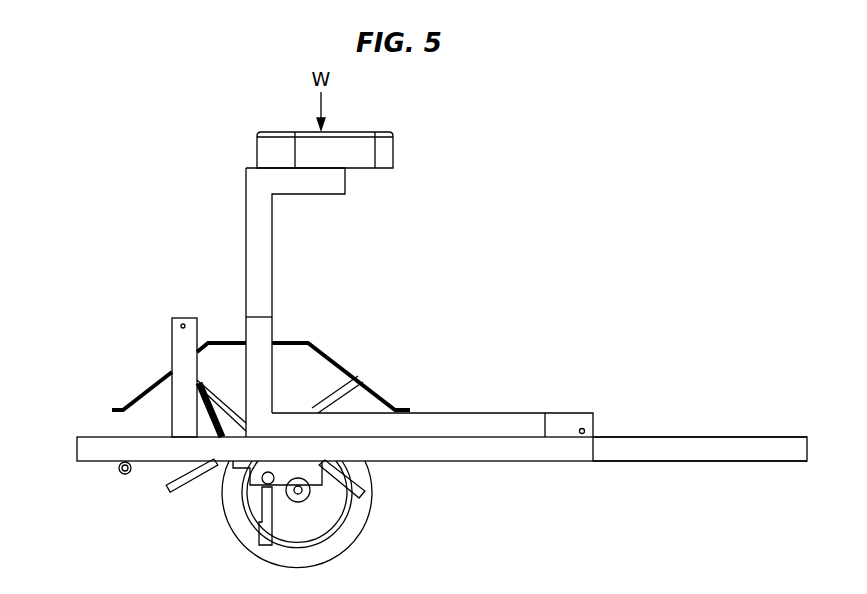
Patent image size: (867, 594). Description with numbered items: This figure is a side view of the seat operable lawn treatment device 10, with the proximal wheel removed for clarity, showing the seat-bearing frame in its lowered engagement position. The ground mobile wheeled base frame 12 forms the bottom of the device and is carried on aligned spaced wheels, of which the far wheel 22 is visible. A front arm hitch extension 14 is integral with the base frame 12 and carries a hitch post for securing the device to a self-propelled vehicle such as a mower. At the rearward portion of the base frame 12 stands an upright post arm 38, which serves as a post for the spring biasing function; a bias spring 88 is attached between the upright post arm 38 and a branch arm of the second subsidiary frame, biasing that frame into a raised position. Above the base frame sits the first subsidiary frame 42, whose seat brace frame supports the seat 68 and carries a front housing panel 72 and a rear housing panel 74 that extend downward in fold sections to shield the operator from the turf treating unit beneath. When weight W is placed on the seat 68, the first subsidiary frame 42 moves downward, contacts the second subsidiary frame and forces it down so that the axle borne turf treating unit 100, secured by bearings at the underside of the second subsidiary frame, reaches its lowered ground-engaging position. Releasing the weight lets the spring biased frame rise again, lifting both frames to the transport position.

The seat operable lawn treatment device 10 is at (598, 215).
The wheeled base frame 12 is at (553, 448).
The front arm hitch extension 14 is at (748, 448).
The wheel 22 is at (348, 530).
The upright post arm 38 is at (178, 420).
The first subsidiary frame 42 is at (423, 425).
The seat 68 is at (385, 155).
The front housing panel 72 is at (342, 362).
The rear housing panel 74 is at (143, 392).
The bias spring 88 is at (197, 421).
The axle borne turf treating unit 100 is at (207, 492).